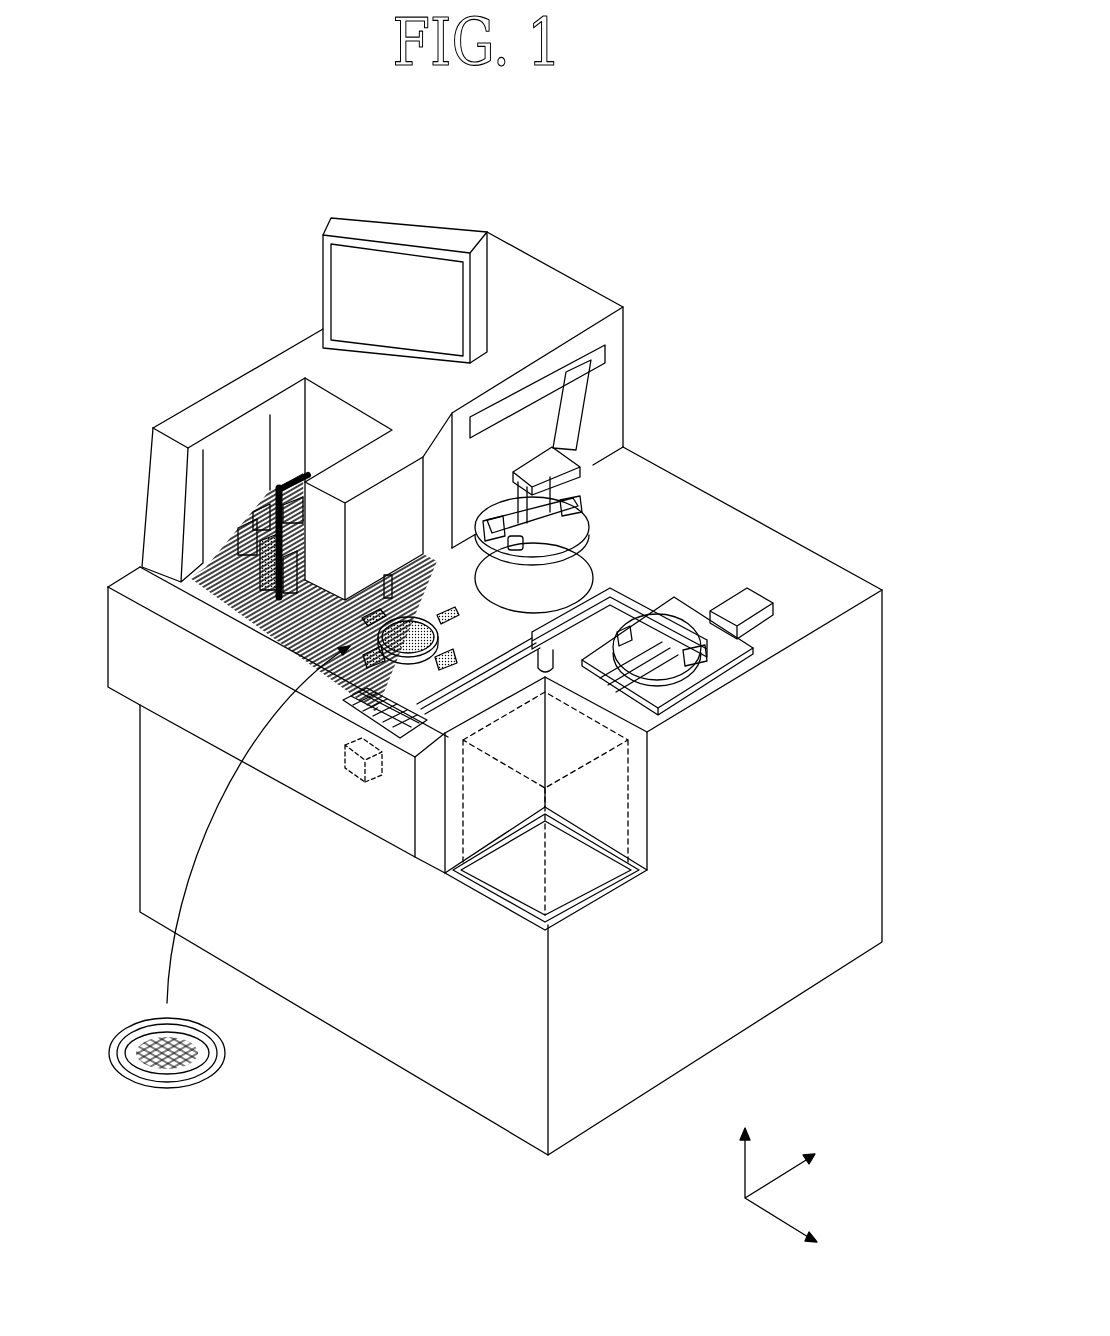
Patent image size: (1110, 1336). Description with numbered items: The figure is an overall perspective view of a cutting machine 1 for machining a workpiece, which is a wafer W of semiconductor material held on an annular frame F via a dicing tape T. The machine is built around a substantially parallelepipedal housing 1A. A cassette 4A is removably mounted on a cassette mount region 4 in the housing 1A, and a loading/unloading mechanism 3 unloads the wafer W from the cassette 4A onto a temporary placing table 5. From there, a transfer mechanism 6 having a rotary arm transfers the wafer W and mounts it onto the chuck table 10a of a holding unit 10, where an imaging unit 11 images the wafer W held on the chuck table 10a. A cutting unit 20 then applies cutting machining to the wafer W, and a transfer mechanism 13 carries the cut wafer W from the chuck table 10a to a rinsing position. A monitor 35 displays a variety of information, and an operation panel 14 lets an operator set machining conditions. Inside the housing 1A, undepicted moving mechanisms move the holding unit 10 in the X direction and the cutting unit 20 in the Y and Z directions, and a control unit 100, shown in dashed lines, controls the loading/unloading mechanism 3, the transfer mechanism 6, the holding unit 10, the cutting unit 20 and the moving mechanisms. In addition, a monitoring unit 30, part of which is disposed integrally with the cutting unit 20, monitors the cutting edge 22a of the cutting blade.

The cutting machine 1 is at (230, 304).
The housing 1A is at (863, 787).
The loading/unloading mechanism 3 is at (753, 598).
The cassette mount region 4 is at (506, 892).
The cassette 4A is at (632, 838).
The temporary placing table 5 is at (673, 706).
The transfer mechanism 6 is at (636, 603).
The holding unit 10 is at (443, 616).
The chuck table 10a is at (440, 637).
The imaging unit 11 is at (390, 611).
The transfer mechanism 13 is at (590, 392).
The operation panel 14 is at (345, 716).
The cutting unit 20 is at (258, 521).
The cutting edge 22a is at (200, 556).
The monitoring unit 30 is at (289, 486).
The monitor 35 is at (403, 235).
The control unit 100 is at (360, 770).
The wafer W is at (145, 1040).
The dicing tape T is at (124, 1045).
The annular frame F is at (223, 1044).